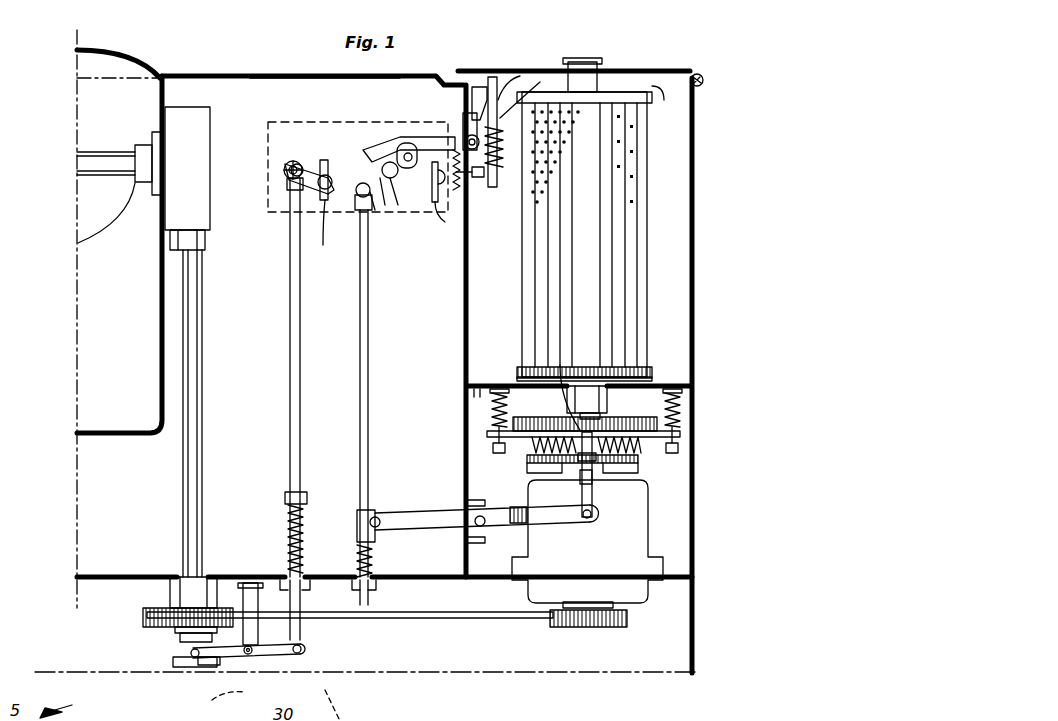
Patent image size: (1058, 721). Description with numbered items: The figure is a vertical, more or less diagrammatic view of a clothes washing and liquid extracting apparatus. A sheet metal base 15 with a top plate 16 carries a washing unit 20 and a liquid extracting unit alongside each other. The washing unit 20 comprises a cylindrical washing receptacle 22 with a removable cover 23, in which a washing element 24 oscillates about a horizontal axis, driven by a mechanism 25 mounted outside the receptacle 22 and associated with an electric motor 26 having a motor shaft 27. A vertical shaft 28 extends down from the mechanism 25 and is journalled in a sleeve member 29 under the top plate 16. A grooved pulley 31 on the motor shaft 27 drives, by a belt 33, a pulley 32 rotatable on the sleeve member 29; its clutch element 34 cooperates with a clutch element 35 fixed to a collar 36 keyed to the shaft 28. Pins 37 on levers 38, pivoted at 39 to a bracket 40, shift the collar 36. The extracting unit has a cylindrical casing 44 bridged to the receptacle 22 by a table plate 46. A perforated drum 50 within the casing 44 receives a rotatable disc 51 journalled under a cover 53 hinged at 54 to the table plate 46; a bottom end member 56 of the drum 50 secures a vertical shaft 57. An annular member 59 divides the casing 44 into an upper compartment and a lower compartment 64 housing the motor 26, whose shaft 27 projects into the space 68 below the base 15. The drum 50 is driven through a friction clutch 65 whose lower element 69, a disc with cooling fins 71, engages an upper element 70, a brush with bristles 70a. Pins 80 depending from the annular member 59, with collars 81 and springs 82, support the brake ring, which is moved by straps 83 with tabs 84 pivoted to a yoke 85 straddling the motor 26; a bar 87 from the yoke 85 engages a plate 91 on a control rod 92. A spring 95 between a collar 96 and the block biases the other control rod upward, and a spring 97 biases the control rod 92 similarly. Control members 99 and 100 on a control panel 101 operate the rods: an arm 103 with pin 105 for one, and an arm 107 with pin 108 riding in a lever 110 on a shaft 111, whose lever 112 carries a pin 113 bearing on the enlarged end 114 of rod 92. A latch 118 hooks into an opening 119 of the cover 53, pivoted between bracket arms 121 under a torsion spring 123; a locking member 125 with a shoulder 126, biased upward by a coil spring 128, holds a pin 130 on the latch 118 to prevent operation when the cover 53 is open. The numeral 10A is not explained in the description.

The base 15 is at (92, 565).
The top plate 16 is at (230, 575).
The washing unit 20 is at (173, 71).
The washing receptacle 22 is at (130, 437).
The removable cover 23 is at (132, 60).
The washing element 24 is at (105, 242).
The mechanism 25 is at (200, 222).
The electric motor 26 is at (640, 525).
The motor shaft 27 is at (590, 610).
The shaft 28 is at (182, 492).
The sleeve member 29 is at (168, 594).
The grooved pulley 31 is at (560, 628).
The grooved pulley 32 is at (142, 620).
The belt 33 is at (480, 620).
The clutch element 34 is at (174, 630).
The clutch element 35 is at (180, 638).
The collar 36 is at (176, 668).
The pins 37 is at (215, 665).
The levers 38 is at (285, 654).
The pivot 39 is at (252, 655).
The bracket 40 is at (258, 605).
The casing 44 is at (697, 275).
The table plate 46 is at (302, 74).
The perforated drum 50 is at (584, 235).
The disc 51 is at (620, 88).
The cover 53 is at (628, 70).
The hinge 54 is at (705, 82).
The bottom end member 56 is at (630, 376).
The vertical shaft 57 is at (600, 410).
The annular member 59 is at (470, 383).
The lower compartment 64 is at (489, 511).
The friction clutch 65 is at (553, 410).
The space 68 is at (653, 624).
The lower clutch element 69 is at (640, 460).
The upper clutch element 70 is at (650, 425).
The bristles 70a is at (530, 447).
The fins 71 is at (640, 470).
The pins 80 is at (495, 445).
The collars 81 is at (492, 448).
The helical coil spring 82 is at (490, 410).
The straps 83 is at (580, 495).
The tabs 84 is at (572, 432).
The yoke 85 is at (515, 525).
The bar 87 is at (398, 530).
The plate 91 is at (356, 520).
The control rod 92 is at (358, 306).
The helical coil spring 95 is at (286, 512).
The collar 96 is at (284, 494).
The helical coil spring 97 is at (356, 557).
The control member 99 is at (322, 205).
The control member 100 is at (450, 222).
The control panel 101 is at (323, 121).
The arm 103 is at (322, 163).
The pin 105 is at (295, 163).
The arm 107 is at (396, 165).
The pin 108 is at (407, 142).
The lever 110 is at (405, 205).
The shaft 111 is at (390, 230).
The lever 112 is at (383, 205).
The pin 113 is at (330, 178).
The enlarged end 114 is at (345, 248).
The latch 118 is at (478, 85).
The opening 119 is at (500, 85).
The bracket arms 121 is at (463, 278).
The torsion spring 123 is at (497, 170).
The locking member 125 is at (529, 97).
The shoulder 126 is at (525, 74).
The coil spring 128 is at (488, 180).
The pin 130 is at (468, 115).
The gear 10A is at (283, 172).